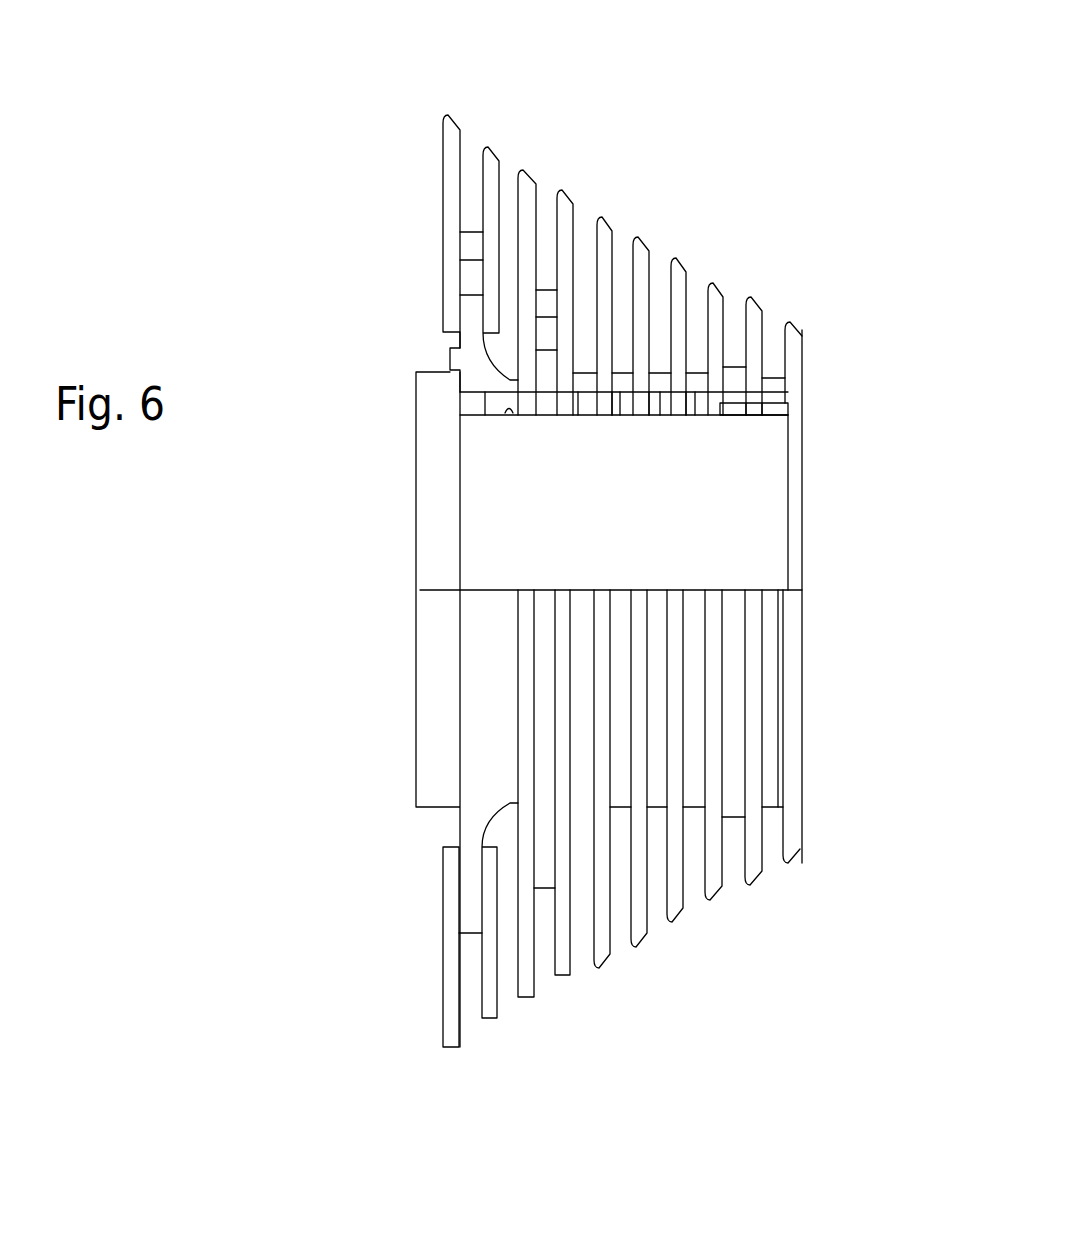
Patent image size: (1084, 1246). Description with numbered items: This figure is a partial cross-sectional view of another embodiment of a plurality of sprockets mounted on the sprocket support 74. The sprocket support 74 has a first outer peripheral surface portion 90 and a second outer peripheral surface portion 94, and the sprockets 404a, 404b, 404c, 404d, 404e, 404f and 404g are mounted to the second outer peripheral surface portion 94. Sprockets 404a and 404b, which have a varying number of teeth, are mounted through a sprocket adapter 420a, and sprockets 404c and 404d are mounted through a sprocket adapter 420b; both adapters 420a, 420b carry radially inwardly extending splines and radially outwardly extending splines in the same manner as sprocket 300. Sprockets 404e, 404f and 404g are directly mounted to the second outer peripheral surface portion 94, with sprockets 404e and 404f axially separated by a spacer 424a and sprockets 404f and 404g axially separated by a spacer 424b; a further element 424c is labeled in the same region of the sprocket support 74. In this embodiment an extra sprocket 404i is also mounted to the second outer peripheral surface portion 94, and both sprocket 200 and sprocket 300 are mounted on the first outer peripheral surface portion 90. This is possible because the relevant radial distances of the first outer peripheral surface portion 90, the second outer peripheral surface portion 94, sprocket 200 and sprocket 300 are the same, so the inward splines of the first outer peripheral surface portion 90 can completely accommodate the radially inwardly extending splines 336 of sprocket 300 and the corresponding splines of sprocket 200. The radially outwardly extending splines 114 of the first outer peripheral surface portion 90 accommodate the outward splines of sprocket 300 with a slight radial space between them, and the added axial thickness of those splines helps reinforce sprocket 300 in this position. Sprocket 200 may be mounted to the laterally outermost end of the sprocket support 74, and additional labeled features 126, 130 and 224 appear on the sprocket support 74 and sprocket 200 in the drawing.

The sprocket support 74 is at (377, 461).
The first outer peripheral surface portion 90 is at (802, 408).
The second outer peripheral surface portion 94 is at (486, 415).
The radially outwardly extending splines 114 is at (758, 420).
The first coupling portion 126 is at (510, 415).
The second coupling portion 130 is at (578, 395).
The sprocket 200 is at (805, 330).
The inner peripheral surface 224 is at (773, 418).
The sprocket 300 is at (757, 303).
The radially inwardly extending splines 336 is at (733, 415).
The sprocket 404a is at (445, 122).
The sprocket 404b is at (487, 145).
The sprocket 404c is at (528, 170).
The sprocket 404d is at (563, 192).
The sprocket 404e is at (601, 215).
The sprocket 404f is at (636, 258).
The sprocket 404g is at (676, 270).
The sprocket 404i is at (712, 287).
The sprocket adapter 420a is at (450, 360).
The sprocket adapter 420b is at (545, 370).
The spacer 424a is at (619, 400).
The spacer 424b is at (660, 415).
The third recess 424c is at (695, 400).